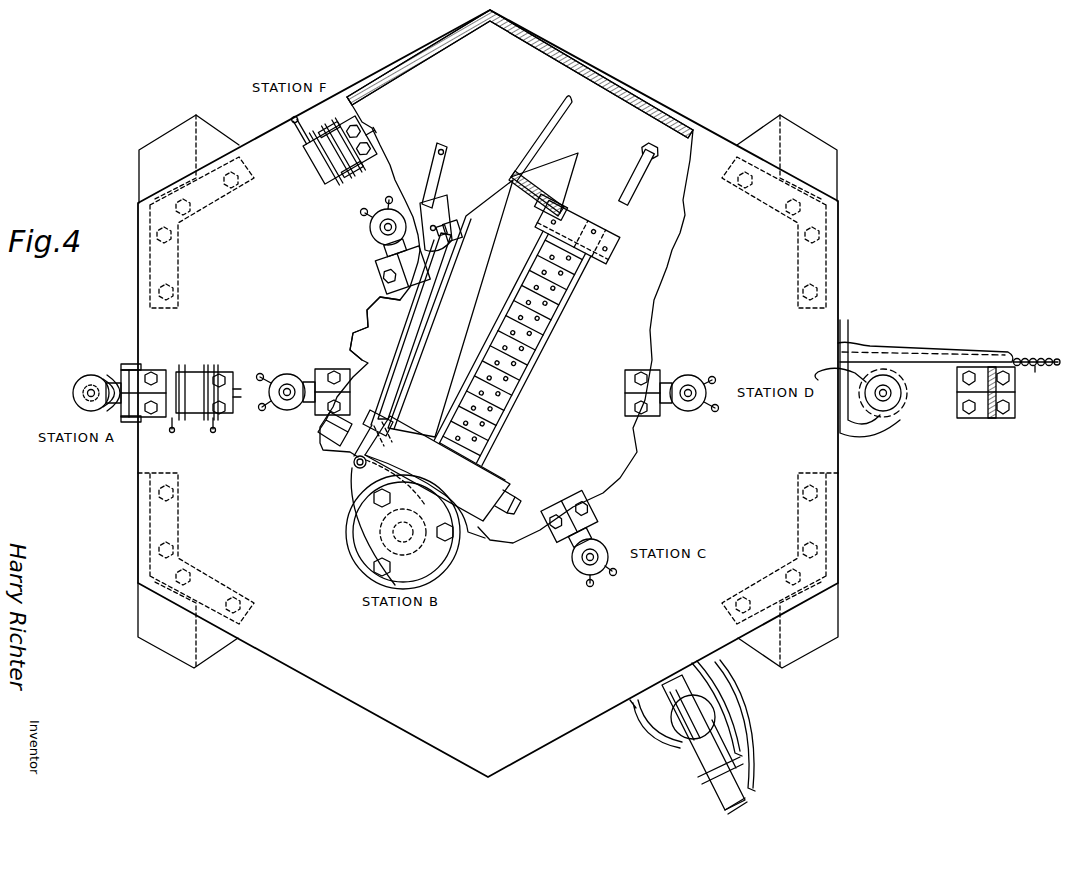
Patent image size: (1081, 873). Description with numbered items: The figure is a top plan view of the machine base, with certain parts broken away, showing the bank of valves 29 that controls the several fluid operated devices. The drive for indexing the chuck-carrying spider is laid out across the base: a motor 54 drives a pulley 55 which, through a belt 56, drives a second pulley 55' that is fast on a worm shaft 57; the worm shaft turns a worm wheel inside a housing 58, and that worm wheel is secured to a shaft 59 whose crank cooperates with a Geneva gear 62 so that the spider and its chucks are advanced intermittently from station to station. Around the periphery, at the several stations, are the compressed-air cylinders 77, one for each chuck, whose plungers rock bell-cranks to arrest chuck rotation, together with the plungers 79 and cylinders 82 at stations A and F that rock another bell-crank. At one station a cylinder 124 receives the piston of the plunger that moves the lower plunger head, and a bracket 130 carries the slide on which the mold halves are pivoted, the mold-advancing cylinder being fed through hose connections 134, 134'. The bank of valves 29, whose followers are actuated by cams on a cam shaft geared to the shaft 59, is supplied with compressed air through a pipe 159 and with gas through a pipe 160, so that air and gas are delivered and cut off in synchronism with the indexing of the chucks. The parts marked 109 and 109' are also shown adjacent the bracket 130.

The bank of valves 29 is at (548, 348).
The motor 54 is at (438, 196).
The pulley 55 is at (428, 316).
The pulley 55' is at (317, 429).
The belt 56 is at (425, 293).
The worm shaft 57 is at (385, 417).
The housing 58 is at (488, 478).
The shaft 59 is at (398, 548).
The Geneva gear 62 is at (360, 340).
The cylinder 77 is at (378, 241).
The plunger 79 is at (355, 184).
The cylinder 82 is at (320, 162).
The pin 109 is at (1061, 373).
The pin 109' is at (1043, 388).
The cylinder 124 is at (887, 413).
The bracket 130 is at (984, 419).
The hose connection 134 is at (1021, 346).
The hose connection 134' is at (1043, 346).
The pipe 159 is at (541, 130).
The pipe 160 is at (627, 178).